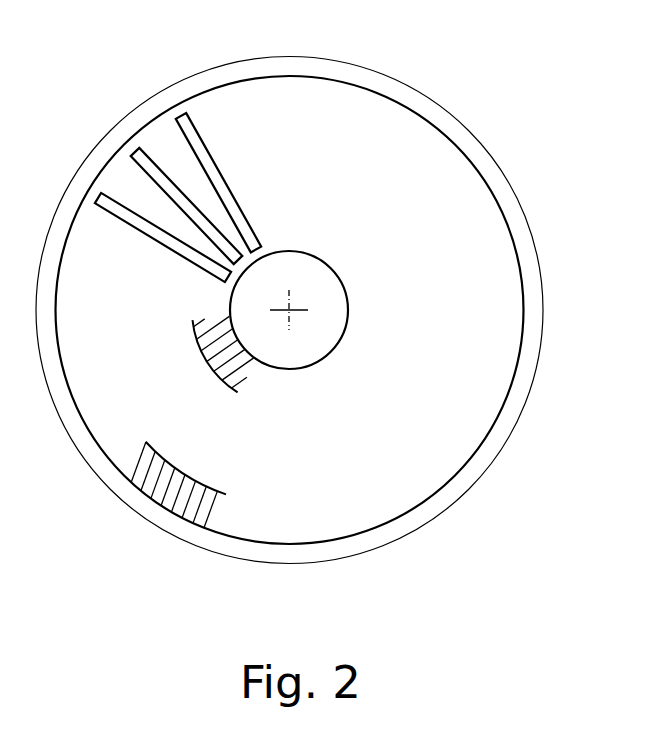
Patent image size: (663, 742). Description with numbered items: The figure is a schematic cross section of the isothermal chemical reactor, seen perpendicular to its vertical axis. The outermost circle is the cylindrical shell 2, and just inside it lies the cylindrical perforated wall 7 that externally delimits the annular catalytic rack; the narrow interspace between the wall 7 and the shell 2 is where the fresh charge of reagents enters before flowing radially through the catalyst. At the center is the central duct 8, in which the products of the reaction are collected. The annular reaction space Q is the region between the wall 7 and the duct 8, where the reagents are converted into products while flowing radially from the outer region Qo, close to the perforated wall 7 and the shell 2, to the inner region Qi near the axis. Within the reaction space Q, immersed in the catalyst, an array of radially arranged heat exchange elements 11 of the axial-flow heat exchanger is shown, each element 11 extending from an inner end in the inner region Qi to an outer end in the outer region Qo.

The cylindrical shell 2 is at (440, 102).
The cylindrical perforated wall 7 is at (337, 82).
The central duct 8 is at (330, 258).
The heat exchange elements 11 is at (212, 172).
The inner region Qi is at (222, 346).
The outer region Qo is at (165, 490).
The annular reaction space Q is at (415, 433).